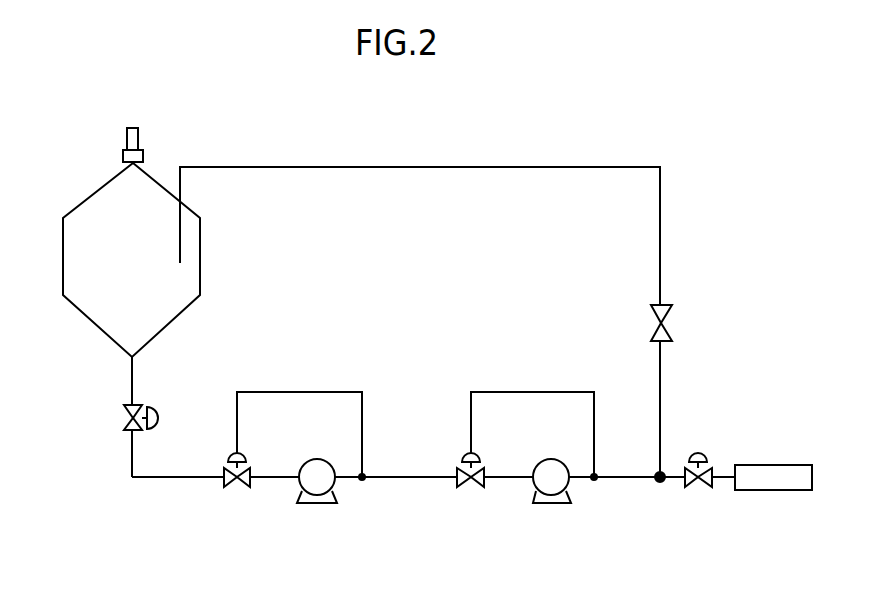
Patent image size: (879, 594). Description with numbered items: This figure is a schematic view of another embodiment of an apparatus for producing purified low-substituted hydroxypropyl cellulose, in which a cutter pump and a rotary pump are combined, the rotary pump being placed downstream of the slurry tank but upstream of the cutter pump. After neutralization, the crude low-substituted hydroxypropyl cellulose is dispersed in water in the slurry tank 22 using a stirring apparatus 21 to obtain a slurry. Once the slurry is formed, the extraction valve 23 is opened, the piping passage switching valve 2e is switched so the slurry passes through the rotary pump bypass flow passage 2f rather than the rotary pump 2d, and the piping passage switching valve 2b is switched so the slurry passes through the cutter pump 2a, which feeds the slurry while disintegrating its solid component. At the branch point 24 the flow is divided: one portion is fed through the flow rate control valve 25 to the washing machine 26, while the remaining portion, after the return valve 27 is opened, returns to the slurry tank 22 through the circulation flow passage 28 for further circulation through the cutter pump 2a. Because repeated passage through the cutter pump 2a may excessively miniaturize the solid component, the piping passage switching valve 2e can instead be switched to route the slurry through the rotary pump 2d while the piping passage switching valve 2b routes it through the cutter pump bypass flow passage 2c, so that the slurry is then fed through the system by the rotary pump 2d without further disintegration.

The stirring apparatus 21 is at (125, 138).
The slurry tank 22 is at (88, 318).
The extraction valve 23 is at (124, 410).
The branch point 24 is at (656, 484).
The flow rate control valve 25 is at (703, 490).
The washing machine 26 is at (763, 465).
The return valve 27 is at (672, 328).
The circulation flow passage 28 is at (660, 213).
The cutter pump 2a is at (548, 504).
The piping passage switching valve 2b is at (474, 488).
The cutter pump bypass flow passage 2c is at (531, 392).
The rotary pump 2d is at (316, 504).
The piping passage switching valve 2e is at (242, 488).
The rotary pump bypass flow passage 2f is at (294, 392).